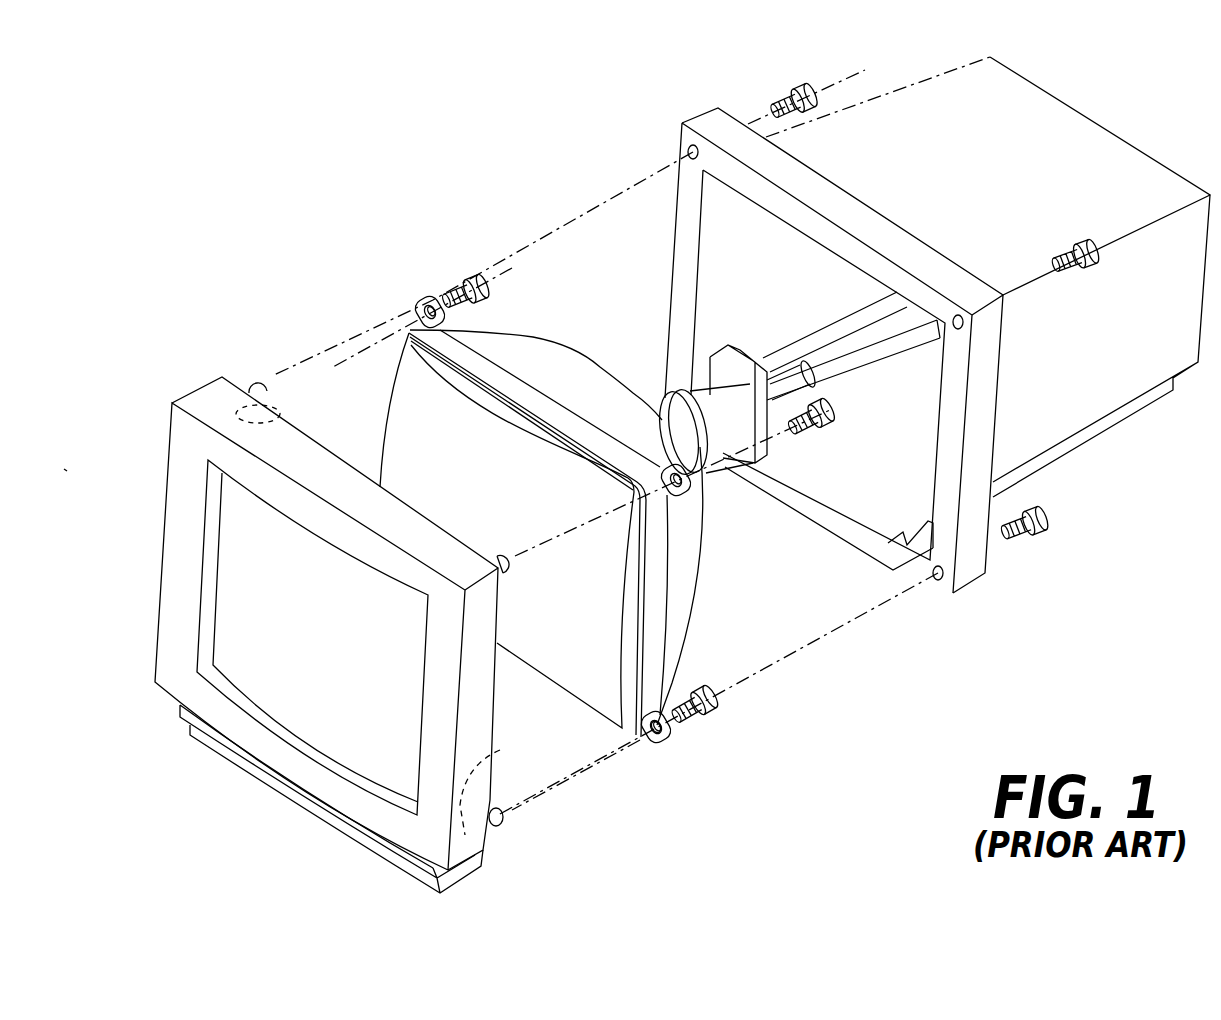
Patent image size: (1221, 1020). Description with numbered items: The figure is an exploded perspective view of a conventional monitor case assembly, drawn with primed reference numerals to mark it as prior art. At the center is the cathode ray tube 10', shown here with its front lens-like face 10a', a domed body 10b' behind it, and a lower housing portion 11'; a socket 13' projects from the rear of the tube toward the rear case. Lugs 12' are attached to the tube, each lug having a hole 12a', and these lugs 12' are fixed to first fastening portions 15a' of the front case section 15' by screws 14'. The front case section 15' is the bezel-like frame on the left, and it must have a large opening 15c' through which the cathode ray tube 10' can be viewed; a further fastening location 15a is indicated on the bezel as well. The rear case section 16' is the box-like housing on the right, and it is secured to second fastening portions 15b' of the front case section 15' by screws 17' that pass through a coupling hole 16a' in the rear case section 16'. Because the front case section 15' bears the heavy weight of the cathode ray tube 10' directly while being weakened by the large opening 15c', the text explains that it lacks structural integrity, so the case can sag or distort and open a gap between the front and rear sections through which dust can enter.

The cathode ray tube 10' is at (554, 485).
The lens 10a' is at (477, 511).
The reflector housing 10b' is at (536, 380).
The lamp body 11' is at (728, 586).
The lugs 12' is at (577, 543).
The tab hole 12a' is at (622, 765).
The bulb socket 13' is at (774, 385).
The screws 14' is at (653, 484).
The front case section 15' is at (326, 601).
The bezel screw hole 15a is at (308, 414).
The first fastening portions 15a' is at (511, 784).
The second fastening portions 15b' is at (419, 580).
The large opening 15c' is at (248, 637).
The rear case section 16' is at (937, 301).
The coupling hole 16a' is at (780, 331).
The screws 17' is at (942, 323).